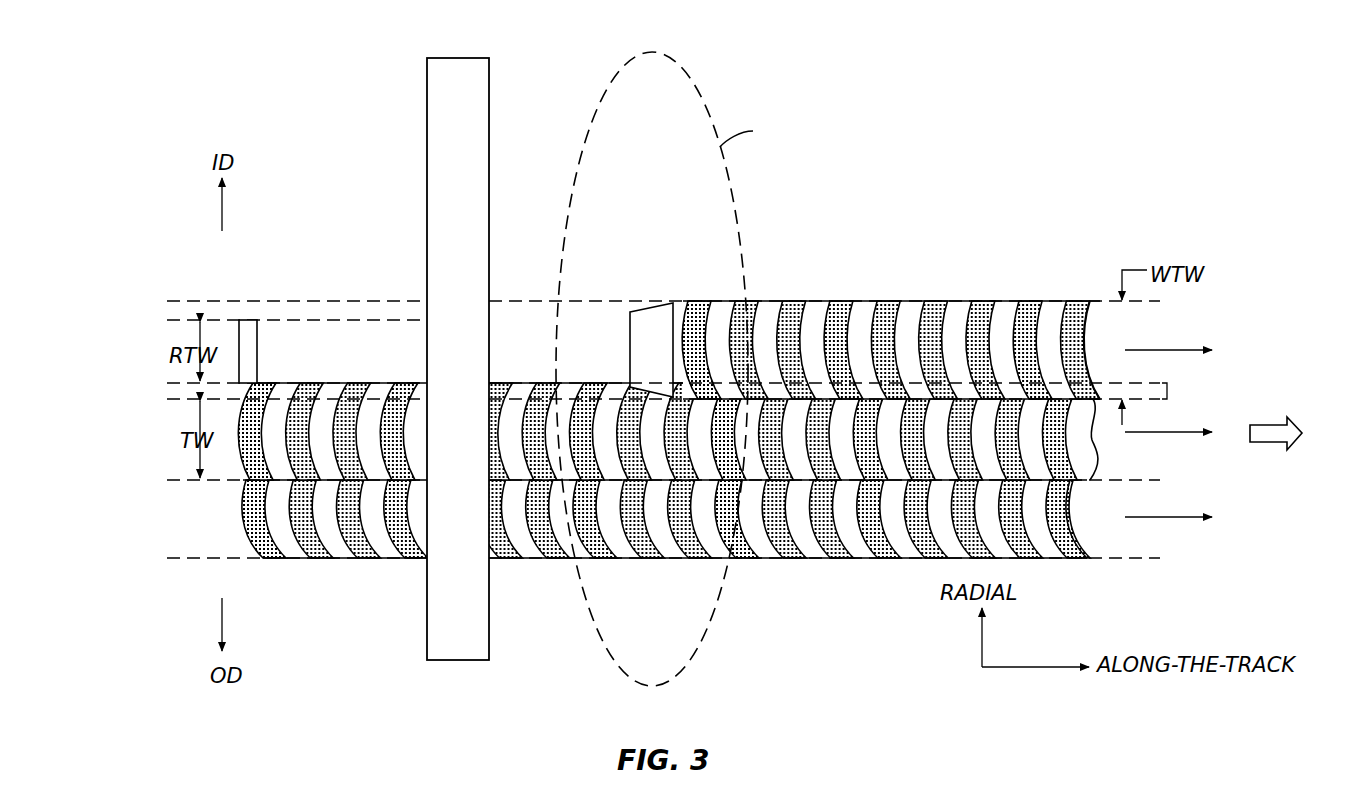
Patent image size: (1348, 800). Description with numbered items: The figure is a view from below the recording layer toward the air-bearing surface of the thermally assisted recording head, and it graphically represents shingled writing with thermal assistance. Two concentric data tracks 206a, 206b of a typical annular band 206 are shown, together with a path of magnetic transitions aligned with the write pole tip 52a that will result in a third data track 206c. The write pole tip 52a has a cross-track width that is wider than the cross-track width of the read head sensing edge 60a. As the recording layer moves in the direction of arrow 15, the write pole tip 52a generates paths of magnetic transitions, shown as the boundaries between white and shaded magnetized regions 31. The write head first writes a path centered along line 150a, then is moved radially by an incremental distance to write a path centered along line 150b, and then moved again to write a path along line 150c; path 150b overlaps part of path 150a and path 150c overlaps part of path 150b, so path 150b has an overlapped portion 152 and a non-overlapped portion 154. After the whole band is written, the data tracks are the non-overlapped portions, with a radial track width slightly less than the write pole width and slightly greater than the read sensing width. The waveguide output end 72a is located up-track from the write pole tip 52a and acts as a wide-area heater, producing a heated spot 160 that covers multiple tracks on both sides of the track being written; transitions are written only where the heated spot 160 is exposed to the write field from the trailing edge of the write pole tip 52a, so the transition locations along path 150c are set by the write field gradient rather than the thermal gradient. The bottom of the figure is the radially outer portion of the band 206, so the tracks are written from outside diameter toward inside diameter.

The arrow indicating direction of recording layer motion 15 is at (1263, 442).
The magnetized regions 31 is at (855, 310).
The write pole tip 52a is at (660, 312).
The read head sensing edge 60a is at (250, 320).
The waveguide output end 72a is at (433, 103).
The line of first write path 150a is at (1170, 517).
The line of second write path 150b is at (1170, 432).
The line of third write path 150c is at (1170, 350).
The overlapped portion 152 is at (1167, 391).
The non-overlapped portion 154 is at (1092, 440).
The heated spot 160 is at (650, 52).
The annular band 206 is at (93, 301).
The first data track 206a is at (163, 483).
The second data track 206b is at (163, 398).
The third data track 206c is at (163, 316).